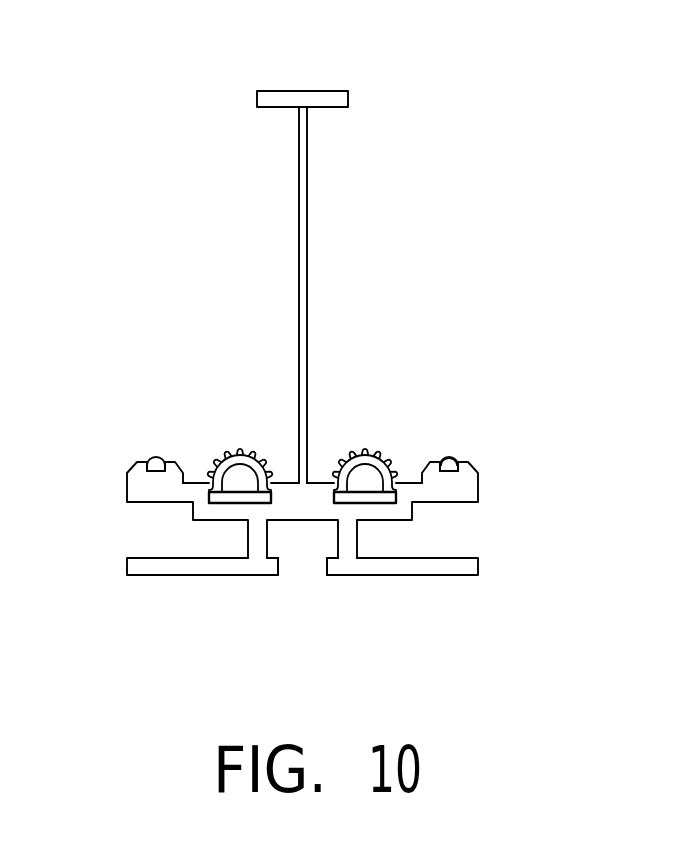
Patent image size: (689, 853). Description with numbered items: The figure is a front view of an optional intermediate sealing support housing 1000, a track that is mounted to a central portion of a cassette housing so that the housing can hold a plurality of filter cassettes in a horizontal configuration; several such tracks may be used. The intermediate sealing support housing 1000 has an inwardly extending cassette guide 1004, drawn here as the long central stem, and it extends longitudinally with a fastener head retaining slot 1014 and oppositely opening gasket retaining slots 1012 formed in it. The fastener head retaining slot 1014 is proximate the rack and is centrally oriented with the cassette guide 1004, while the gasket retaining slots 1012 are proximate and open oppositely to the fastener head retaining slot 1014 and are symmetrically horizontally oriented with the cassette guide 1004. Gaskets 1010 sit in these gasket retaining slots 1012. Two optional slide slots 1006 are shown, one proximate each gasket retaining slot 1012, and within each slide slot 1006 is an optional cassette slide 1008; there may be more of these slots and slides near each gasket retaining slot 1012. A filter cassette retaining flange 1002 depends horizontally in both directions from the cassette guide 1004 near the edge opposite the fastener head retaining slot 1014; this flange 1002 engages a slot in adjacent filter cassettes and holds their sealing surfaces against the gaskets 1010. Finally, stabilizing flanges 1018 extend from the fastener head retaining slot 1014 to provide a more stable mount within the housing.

The intermediate sealing support housing 1000 is at (141, 87).
The filter cassette retaining flange 1002 is at (318, 96).
The cassette guide 1004 is at (305, 213).
The slide slot 1006 is at (147, 462).
The cassette slide 1008 is at (452, 458).
The gasket 1010 is at (365, 452).
The gasket retaining slot 1012 is at (208, 499).
The fastener head retaining slot 1014 is at (302, 545).
The stabilizing flange 1018 is at (180, 565).